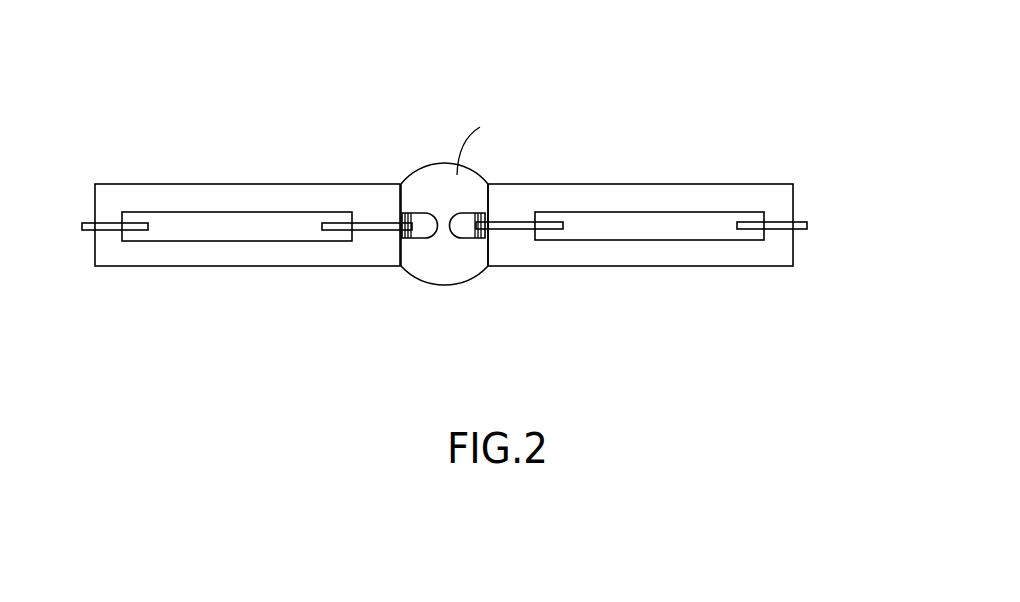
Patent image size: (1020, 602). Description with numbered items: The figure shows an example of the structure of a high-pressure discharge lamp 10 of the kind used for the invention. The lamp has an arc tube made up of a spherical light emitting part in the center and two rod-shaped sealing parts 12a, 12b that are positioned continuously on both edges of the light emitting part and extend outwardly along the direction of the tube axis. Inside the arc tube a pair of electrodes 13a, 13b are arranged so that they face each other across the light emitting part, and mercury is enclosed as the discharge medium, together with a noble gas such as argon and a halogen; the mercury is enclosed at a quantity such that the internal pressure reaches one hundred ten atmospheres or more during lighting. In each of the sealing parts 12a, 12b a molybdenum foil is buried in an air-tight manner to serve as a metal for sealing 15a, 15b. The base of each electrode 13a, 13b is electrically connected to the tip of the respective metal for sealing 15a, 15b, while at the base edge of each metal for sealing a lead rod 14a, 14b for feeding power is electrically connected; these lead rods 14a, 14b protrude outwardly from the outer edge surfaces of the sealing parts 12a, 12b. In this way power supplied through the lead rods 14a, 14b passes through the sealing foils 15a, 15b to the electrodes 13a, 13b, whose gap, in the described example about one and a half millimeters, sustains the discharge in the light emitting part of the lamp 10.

The high-pressure discharge lamp 10 is at (505, 38).
The sealing part 12a is at (115, 255).
The sealing part 12b is at (722, 195).
The electrode 13a is at (423, 233).
The electrode 13b is at (465, 232).
The lead rod 14a is at (83, 224).
The lead rod 14b is at (802, 224).
The metal for sealing 15a is at (237, 230).
The metal for sealing 15b is at (636, 232).